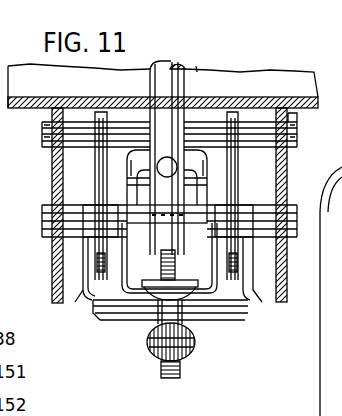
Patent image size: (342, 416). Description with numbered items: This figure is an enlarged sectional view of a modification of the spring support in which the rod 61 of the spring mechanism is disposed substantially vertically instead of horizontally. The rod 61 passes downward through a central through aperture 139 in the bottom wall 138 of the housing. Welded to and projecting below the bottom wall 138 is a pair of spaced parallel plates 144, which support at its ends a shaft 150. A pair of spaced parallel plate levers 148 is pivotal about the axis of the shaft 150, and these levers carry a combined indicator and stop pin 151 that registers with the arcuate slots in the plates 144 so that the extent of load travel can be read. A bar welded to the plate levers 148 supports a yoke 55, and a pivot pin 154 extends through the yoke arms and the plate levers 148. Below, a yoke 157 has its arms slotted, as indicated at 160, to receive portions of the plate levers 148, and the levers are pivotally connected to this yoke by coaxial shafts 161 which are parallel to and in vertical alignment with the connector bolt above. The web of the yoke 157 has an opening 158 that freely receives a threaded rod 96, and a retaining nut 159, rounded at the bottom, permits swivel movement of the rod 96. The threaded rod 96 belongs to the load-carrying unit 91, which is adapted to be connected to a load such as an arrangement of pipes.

The rod 61 is at (168, 60).
The central through aperture 139 is at (197, 95).
The bottom wall 138 is at (233, 96).
The combined indicator and stop pin 151 is at (298, 123).
The yoke 55 is at (125, 157).
The plate levers 148 is at (100, 173).
The pivot pin 154 is at (249, 198).
The shaft 150 is at (48, 229).
The coaxial shafts 161 is at (188, 250).
The spaced parallel plates 144 is at (51, 283).
The slots 160 is at (83, 293).
The yoke 157 is at (90, 314).
The load-carrying unit 91 is at (141, 343).
The retaining nut 159 is at (186, 289).
The opening 158 is at (188, 298).
The threaded rod 96 is at (176, 373).